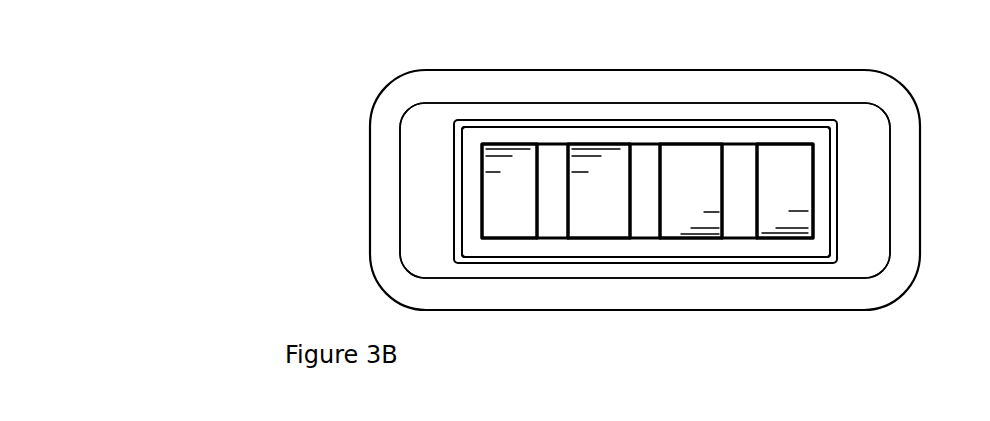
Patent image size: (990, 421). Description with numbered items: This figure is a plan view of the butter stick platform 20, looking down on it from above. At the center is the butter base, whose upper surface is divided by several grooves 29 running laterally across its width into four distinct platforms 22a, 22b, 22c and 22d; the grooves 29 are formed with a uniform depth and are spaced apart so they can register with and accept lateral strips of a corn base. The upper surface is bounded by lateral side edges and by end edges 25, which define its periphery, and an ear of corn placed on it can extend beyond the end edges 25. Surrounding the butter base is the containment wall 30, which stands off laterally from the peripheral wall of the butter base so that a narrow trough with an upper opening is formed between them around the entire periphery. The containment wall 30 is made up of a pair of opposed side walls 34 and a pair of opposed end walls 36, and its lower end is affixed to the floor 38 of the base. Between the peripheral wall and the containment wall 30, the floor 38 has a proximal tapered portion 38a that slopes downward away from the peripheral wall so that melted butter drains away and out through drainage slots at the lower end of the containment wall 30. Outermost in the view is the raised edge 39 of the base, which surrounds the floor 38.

The butter stick platform 20 is at (292, 138).
The platform 22a is at (500, 226).
The platform 22b is at (597, 222).
The platform 22c is at (700, 225).
The platform 22d is at (780, 230).
The end edges 25 is at (813, 208).
The grooves 29 is at (643, 177).
The containment wall 30 is at (698, 119).
The side walls 34 is at (498, 127).
The end walls 36 is at (860, 140).
The floor 38 is at (432, 201).
The proximal tapered portion 38a is at (810, 258).
The raised edge 39 is at (640, 70).